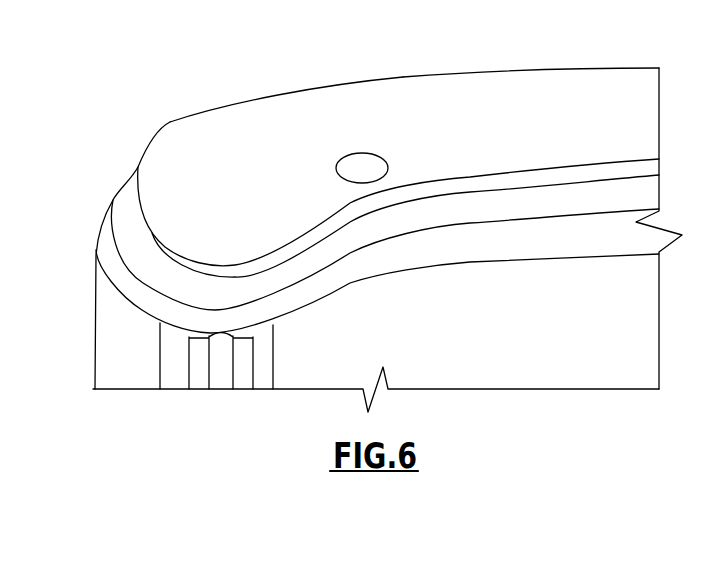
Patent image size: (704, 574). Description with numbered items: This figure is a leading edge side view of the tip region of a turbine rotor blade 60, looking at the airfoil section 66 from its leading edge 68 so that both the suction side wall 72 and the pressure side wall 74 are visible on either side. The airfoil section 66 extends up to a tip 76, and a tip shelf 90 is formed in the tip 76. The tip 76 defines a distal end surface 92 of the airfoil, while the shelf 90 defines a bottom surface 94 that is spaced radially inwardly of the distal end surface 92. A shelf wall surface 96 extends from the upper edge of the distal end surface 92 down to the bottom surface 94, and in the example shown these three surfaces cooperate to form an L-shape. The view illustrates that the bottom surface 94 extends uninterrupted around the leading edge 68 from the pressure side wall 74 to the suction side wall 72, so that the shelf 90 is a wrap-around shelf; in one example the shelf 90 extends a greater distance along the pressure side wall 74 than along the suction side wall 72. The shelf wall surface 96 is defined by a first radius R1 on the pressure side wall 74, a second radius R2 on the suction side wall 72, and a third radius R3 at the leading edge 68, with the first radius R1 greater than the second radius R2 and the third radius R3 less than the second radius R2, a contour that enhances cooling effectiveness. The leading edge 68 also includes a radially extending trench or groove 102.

The turbine rotor blade 60 is at (132, 104).
The airfoil section 66 is at (558, 370).
The leading edge 68 is at (93, 272).
The suction side wall 72 is at (403, 77).
The pressure side wall 74 is at (518, 168).
The tip 76 is at (468, 88).
The tip shelf 90 is at (147, 288).
The distal end surface 92 is at (293, 169).
The bottom surface 94 is at (508, 261).
The shelf wall surface 96 is at (417, 218).
The groove 102 is at (223, 330).
The first radius R1 is at (458, 178).
The second radius R2 is at (157, 138).
The third radius R3 is at (165, 240).